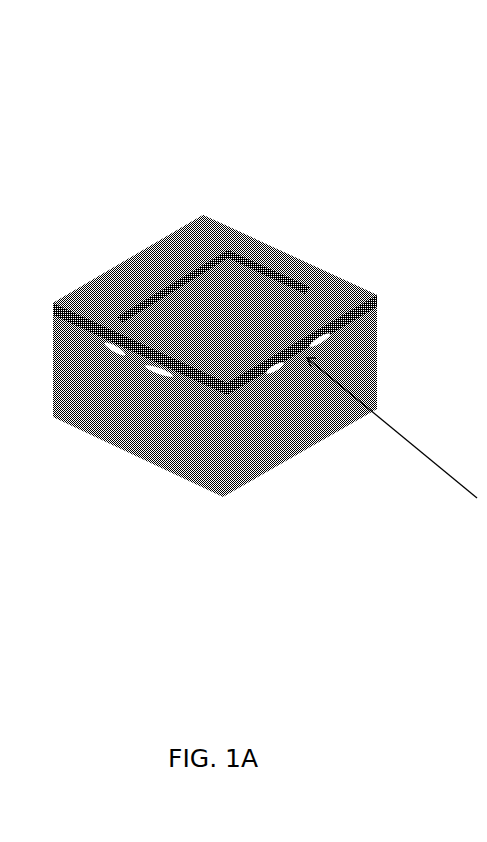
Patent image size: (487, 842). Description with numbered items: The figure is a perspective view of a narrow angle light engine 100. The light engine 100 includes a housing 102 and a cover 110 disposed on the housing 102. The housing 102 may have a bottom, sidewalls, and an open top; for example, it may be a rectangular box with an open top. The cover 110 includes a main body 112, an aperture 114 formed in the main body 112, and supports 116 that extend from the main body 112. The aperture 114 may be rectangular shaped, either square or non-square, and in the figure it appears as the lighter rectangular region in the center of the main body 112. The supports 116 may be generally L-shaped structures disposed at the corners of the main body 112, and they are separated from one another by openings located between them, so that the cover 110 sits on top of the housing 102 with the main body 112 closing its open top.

The light engine 100 is at (205, 150).
The housing 102 is at (322, 410).
The cover 110 is at (457, 257).
The main body 112 is at (330, 290).
The aperture 114 is at (327, 268).
The supports 116 is at (377, 313).